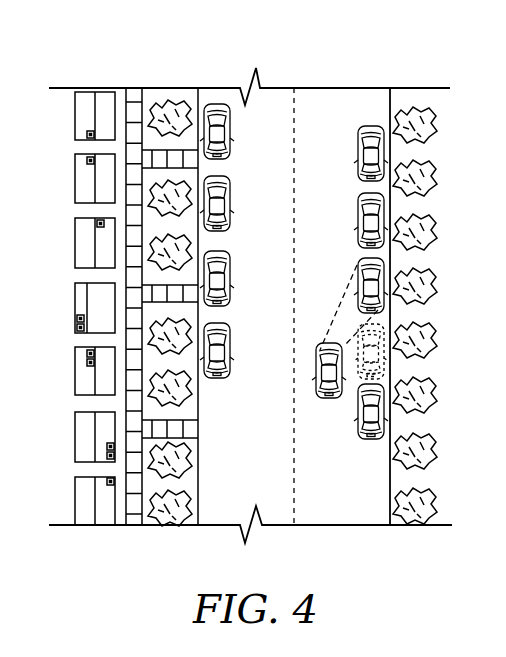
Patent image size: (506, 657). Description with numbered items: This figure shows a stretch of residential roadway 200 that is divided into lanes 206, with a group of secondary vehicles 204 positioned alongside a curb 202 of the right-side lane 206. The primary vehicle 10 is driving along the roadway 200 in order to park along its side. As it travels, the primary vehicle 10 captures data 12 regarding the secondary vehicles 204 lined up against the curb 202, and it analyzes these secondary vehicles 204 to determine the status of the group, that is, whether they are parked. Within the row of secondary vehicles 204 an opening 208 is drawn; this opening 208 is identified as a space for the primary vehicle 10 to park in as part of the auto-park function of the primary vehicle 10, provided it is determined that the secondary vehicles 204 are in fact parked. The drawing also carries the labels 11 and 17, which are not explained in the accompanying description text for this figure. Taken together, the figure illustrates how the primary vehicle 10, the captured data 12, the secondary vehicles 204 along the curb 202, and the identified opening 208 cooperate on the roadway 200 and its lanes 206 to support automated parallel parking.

The residential roadway 200 is at (138, 63).
The lanes 206 is at (328, 98).
The curb 202 is at (390, 100).
The secondary vehicles 204 is at (398, 208).
The opening 208 is at (396, 321).
The primary vehicle 10 is at (356, 380).
The data 12 is at (347, 287).
The vehicle system 11 is at (505, 415).
The sensor 17 is at (505, 625).